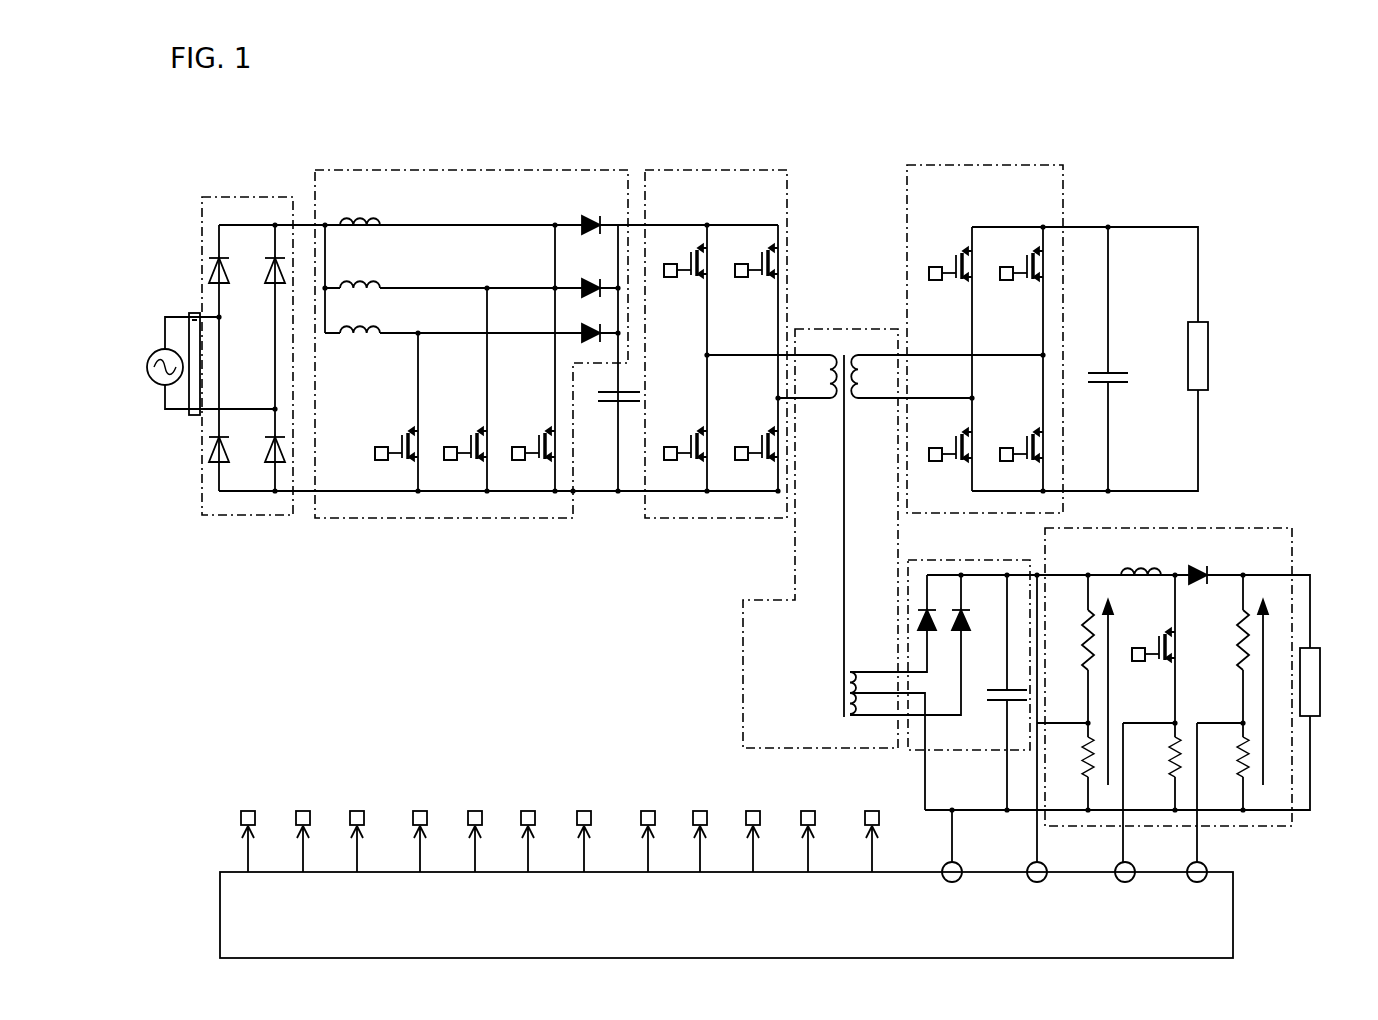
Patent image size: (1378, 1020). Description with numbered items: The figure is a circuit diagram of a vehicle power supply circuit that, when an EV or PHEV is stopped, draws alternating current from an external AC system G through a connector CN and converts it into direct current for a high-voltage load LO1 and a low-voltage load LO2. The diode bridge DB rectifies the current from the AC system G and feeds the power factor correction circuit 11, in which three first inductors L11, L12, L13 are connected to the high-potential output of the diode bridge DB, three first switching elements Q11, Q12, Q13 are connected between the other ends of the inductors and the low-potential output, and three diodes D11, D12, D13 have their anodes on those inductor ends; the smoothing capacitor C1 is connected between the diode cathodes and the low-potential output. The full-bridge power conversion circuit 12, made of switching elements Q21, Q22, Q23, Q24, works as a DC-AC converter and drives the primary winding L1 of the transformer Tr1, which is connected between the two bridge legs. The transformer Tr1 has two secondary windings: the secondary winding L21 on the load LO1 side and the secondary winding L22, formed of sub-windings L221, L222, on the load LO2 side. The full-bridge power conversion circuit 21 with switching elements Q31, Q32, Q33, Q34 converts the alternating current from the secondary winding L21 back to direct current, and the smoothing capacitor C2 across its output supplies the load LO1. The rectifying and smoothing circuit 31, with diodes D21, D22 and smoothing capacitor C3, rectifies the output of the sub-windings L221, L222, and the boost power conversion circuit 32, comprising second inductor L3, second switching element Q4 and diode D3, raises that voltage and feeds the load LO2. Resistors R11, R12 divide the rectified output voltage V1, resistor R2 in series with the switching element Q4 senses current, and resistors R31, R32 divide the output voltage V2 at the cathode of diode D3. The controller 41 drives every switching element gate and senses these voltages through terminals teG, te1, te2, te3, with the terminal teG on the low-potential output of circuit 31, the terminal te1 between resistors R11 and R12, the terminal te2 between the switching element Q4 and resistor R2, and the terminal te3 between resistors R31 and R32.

The diode bridge DB is at (236, 197).
The AC system G is at (210, 363).
The connector CN is at (192, 418).
The power factor correction circuit 11 is at (315, 170).
The power conversion circuit 12 is at (655, 170).
The power conversion circuit 21 is at (908, 178).
The rectifying and smoothing circuit 31 is at (987, 557).
The power conversion circuit 32 is at (1268, 528).
The controller 41 is at (1233, 920).
The transformer Tr1 is at (846, 328).
The inductor L11 is at (360, 210).
The inductor L12 is at (360, 273).
The inductor L13 is at (360, 318).
The diode D11 is at (596, 214).
The diode D12 is at (596, 277).
The diode D13 is at (596, 322).
The smoothing capacitor C1 is at (615, 409).
The switching element Q11 is at (533, 358).
The switching element Q12 is at (465, 389).
The switching element Q13 is at (396, 412).
The switching element Q21 is at (679, 290).
The switching element Q22 is at (679, 423).
The switching element Q23 is at (750, 311).
The switching element Q24 is at (750, 444).
The primary winding L1 is at (821, 376).
The secondary winding L21 is at (947, 376).
The secondary winding L22 is at (856, 720).
The sub-winding L221 is at (863, 661).
The sub-winding L222 is at (795, 672).
The switching element Q31 is at (947, 312).
The switching element Q32 is at (947, 444).
The switching element Q33 is at (1017, 291).
The switching element Q34 is at (1017, 423).
The smoothing capacitor C2 is at (1121, 359).
The load LO1 is at (1216, 356).
The diode D21 is at (939, 614).
The diode D22 is at (974, 614).
The smoothing capacitor C3 is at (1002, 692).
The resistor R11 is at (1072, 649).
The resistor R12 is at (1072, 766).
The resistor R2 is at (1164, 766).
The resistor R31 is at (1227, 649).
The resistor R32 is at (1228, 766).
The inductor L3 is at (1141, 561).
The diode D3 is at (1198, 566).
The switching element Q4 is at (1153, 649).
The voltage value V1 is at (1116, 692).
The voltage value V2 is at (1271, 692).
The load LO2 is at (1327, 682).
The terminal teG is at (950, 859).
The terminal te1 is at (1035, 741).
The terminal te2 is at (1123, 815).
The terminal te3 is at (1195, 815).